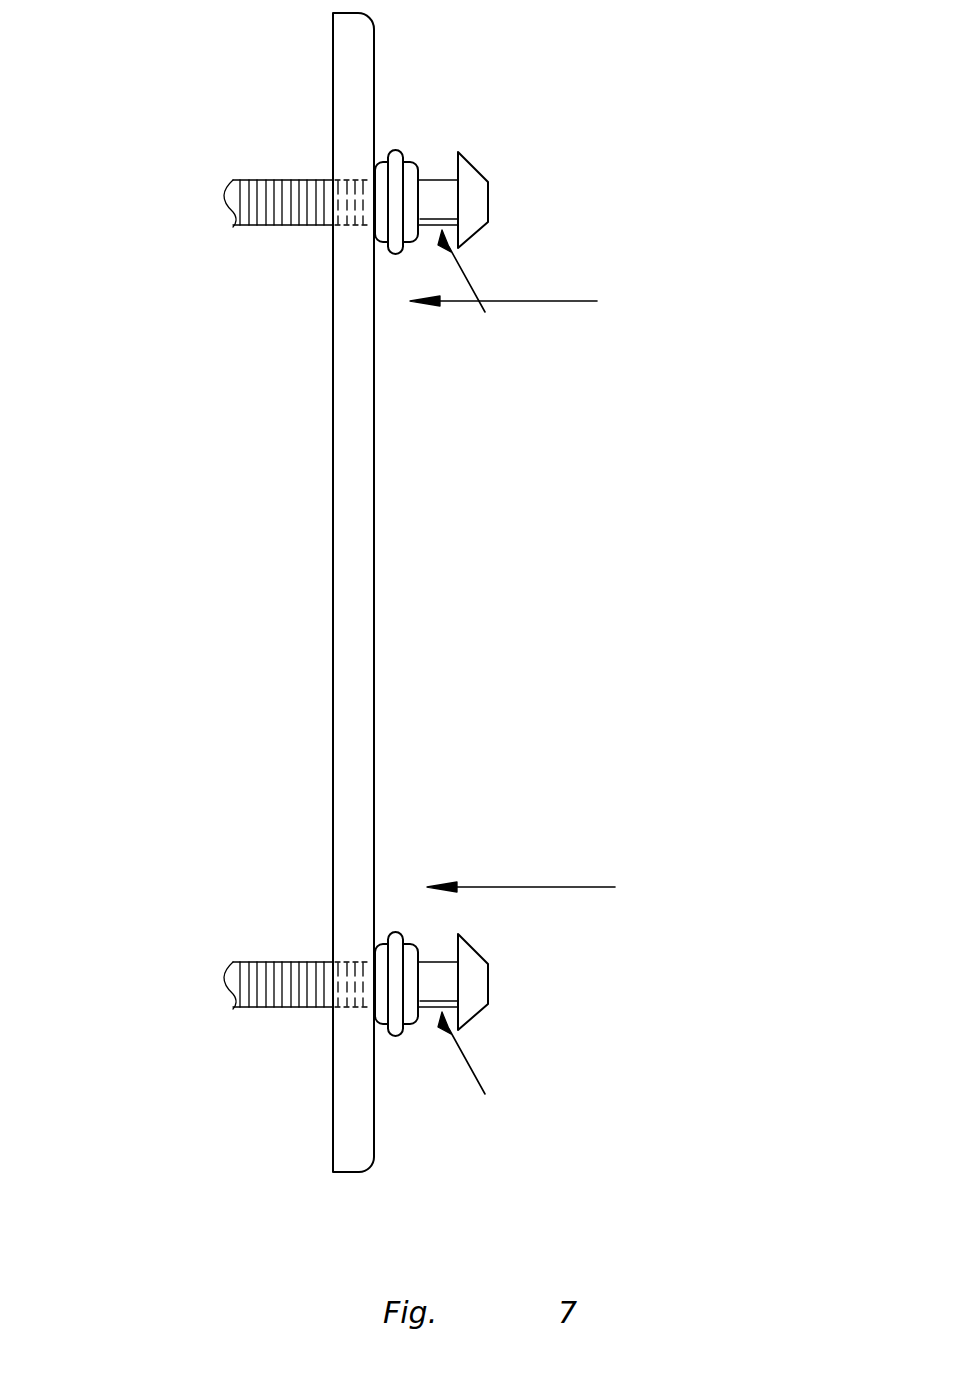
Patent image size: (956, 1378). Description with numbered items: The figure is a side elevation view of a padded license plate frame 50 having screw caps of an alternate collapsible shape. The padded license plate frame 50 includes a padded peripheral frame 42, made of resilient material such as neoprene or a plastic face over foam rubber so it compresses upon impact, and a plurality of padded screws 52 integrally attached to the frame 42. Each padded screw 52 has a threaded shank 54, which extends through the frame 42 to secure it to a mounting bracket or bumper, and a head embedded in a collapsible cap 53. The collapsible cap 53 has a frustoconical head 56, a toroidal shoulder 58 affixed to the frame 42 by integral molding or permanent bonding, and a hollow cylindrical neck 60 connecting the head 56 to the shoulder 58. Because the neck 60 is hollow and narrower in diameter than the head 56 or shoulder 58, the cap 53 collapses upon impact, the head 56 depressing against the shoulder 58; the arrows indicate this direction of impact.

The padded peripheral frame 42 is at (333, 343).
The padded license plate frame 50 is at (200, 148).
The padded screw 52 is at (496, 203).
The collapsible cap 53 is at (485, 312).
The threaded shank 54 is at (283, 228).
The frustoconical head 56 is at (472, 225).
The toroidal shoulder 58 is at (393, 148).
The cylindrical neck 60 is at (432, 180).